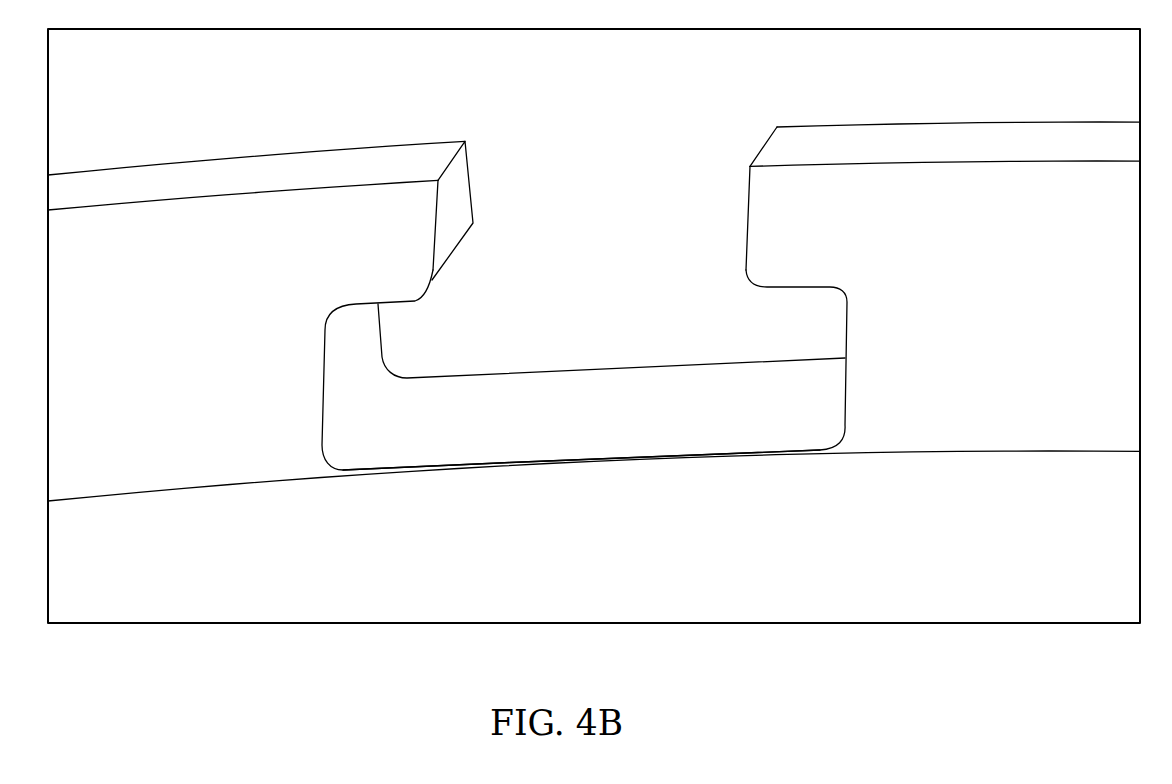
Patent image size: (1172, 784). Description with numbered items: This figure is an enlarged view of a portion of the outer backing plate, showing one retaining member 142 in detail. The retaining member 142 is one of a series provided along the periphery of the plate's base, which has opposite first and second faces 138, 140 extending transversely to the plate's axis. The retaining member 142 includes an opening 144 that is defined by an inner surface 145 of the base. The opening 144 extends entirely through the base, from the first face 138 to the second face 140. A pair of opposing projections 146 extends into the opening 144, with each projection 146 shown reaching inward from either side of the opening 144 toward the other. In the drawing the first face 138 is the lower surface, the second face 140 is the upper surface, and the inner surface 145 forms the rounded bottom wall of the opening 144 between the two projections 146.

The first face 138 is at (775, 595).
The second face 140 is at (443, 377).
The retaining member 142 is at (667, 85).
The opening 144 is at (800, 330).
The inner surface 145 is at (793, 430).
The projection 146 is at (383, 203).